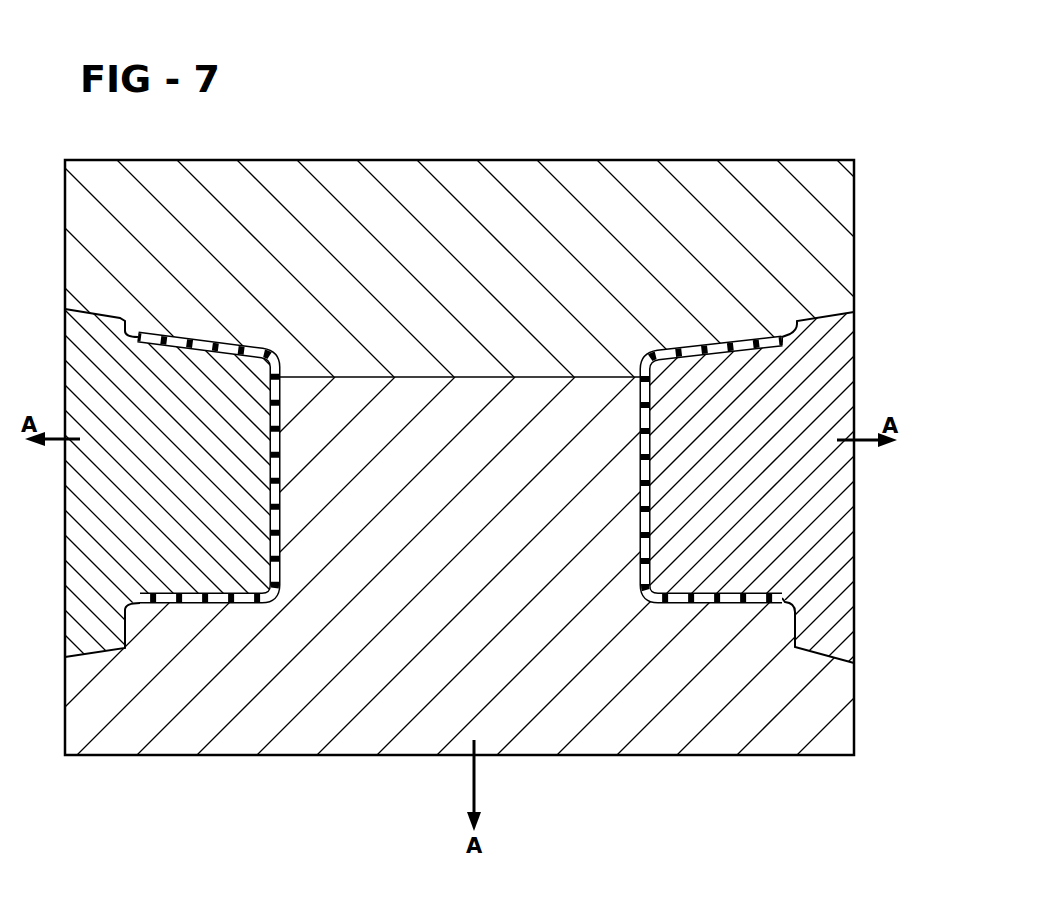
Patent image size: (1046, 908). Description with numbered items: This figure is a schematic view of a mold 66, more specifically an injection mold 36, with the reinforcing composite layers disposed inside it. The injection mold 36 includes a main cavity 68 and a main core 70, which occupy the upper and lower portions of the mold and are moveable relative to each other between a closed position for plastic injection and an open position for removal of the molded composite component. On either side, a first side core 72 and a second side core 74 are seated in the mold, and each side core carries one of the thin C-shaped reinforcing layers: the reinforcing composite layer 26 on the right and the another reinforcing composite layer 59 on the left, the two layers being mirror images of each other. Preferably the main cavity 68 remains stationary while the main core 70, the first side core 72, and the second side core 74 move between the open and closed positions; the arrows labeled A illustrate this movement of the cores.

The injection mold 36 is at (327, 148).
The mold 66 is at (501, 121).
The main cavity 68 is at (637, 178).
The main core 70 is at (242, 735).
The first side core 72 is at (73, 602).
The second side core 74 is at (840, 530).
The reinforcing composite layer 26 is at (643, 439).
The another reinforcing composite layer 59 is at (270, 535).